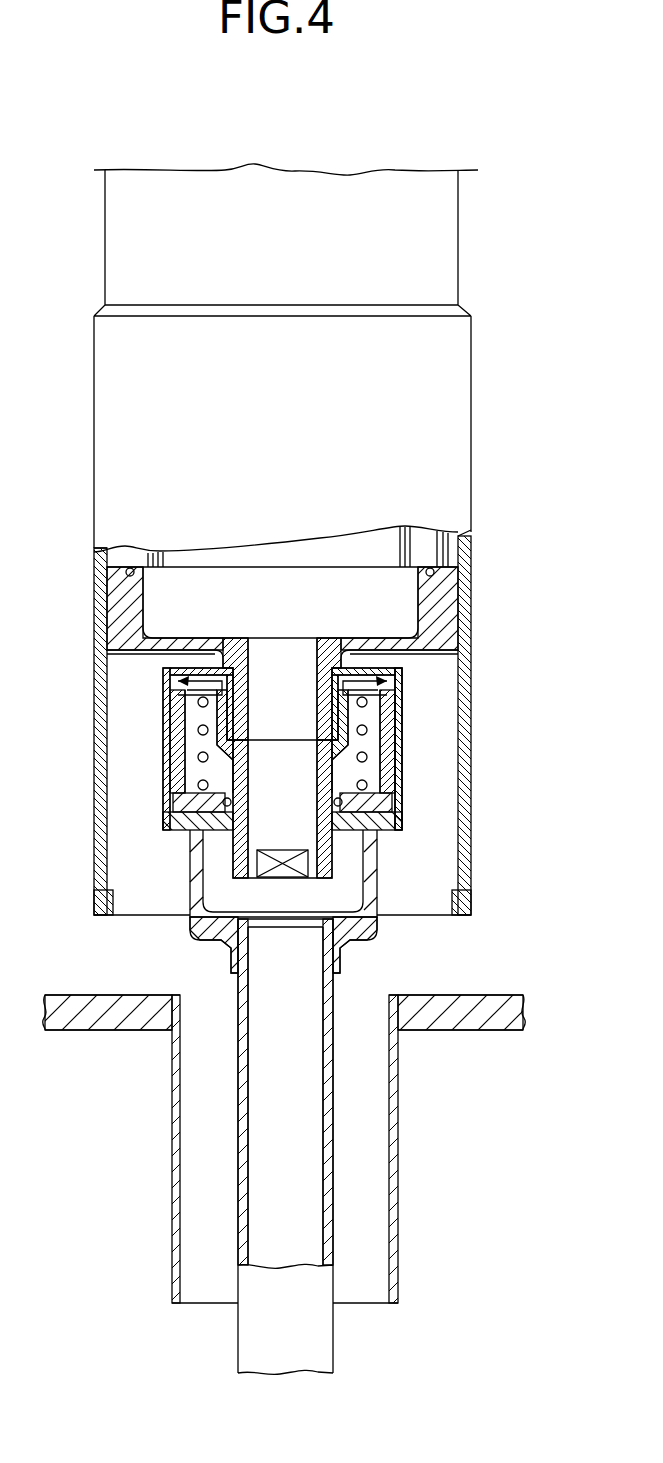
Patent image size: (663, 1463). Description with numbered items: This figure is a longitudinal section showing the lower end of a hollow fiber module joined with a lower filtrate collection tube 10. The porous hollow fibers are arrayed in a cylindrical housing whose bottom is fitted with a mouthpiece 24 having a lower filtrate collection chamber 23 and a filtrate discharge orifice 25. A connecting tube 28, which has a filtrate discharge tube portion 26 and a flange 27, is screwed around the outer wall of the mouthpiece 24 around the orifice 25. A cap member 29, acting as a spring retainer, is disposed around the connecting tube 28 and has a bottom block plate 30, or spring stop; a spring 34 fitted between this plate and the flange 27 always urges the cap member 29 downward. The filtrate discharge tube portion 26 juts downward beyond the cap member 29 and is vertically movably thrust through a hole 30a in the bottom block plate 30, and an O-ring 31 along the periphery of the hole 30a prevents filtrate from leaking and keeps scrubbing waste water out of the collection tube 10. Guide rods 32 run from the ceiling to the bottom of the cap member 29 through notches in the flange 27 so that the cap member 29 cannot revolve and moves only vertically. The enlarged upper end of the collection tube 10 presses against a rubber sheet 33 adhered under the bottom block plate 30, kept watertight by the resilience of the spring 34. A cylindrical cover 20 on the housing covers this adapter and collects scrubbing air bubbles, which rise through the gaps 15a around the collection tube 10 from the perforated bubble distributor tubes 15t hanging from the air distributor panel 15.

The lower filtrate collection tube 10 is at (240, 1198).
The air distributor panel 15 is at (78, 1016).
The perforated bubble distributor tube 15t is at (172, 1116).
The gap 15a is at (196, 1153).
The cylindrical cover 20 is at (96, 722).
The lower filtrate collection chamber 23 is at (150, 583).
The mouthpiece 24 is at (118, 625).
The filtrate discharge orifice 25 is at (258, 668).
The filtrate discharge tube portion 26 is at (255, 832).
The flange 27 is at (178, 686).
The connecting tube 28 is at (255, 866).
The cap member 29 is at (408, 710).
The bottom block plate 30 is at (400, 811).
The hole 30a is at (228, 792).
The O-ring 31 is at (388, 786).
The guide rod 32 is at (198, 749).
The rubber sheet 33 is at (402, 823).
The spring 34 is at (370, 731).